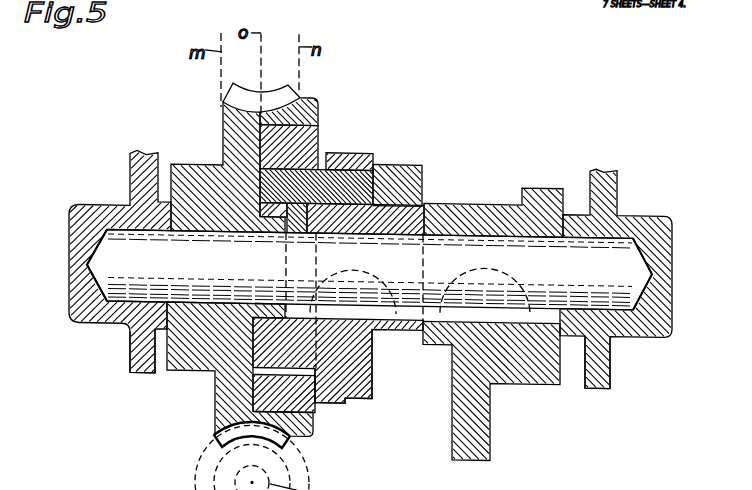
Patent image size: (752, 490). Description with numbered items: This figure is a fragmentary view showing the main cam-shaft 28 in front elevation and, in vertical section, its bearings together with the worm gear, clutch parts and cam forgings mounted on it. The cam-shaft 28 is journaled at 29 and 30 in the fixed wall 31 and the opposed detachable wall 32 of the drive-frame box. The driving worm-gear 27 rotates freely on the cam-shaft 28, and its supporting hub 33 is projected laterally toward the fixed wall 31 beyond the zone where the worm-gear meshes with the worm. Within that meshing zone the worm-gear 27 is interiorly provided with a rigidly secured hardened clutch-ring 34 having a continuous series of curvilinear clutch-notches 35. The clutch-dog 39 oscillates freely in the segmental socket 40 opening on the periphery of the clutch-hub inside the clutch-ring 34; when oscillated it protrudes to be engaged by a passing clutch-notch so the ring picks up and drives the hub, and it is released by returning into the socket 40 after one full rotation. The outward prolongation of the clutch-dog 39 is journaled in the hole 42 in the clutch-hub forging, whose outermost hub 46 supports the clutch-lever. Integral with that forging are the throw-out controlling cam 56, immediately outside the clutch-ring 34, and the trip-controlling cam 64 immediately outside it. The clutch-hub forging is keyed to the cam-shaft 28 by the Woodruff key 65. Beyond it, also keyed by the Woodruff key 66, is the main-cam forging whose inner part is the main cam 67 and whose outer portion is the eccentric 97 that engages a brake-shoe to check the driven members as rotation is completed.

The driving worm-gear 27 is at (223, 101).
The driven cam-shaft 28 is at (369, 269).
The journal 29 is at (650, 321).
The journal 30 is at (88, 324).
The fixed wall 31 is at (130, 362).
The detachable wall 32 is at (613, 374).
The supporting hub 33 is at (187, 364).
The clutch-ring 34 is at (315, 408).
The clutch-notches 35 is at (263, 363).
The clutch-dog 39 is at (393, 158).
The segmental socket 40 is at (305, 204).
The hole 42 is at (355, 147).
The outermost hub 46 is at (399, 325).
The throw-out controlling cam 56 is at (347, 398).
The trip-controlling cam 64 is at (362, 398).
The Woodruff key 65 is at (392, 275).
The Woodruff key 66 is at (512, 276).
The main cam 67 is at (478, 456).
The eccentric 97 is at (538, 178).